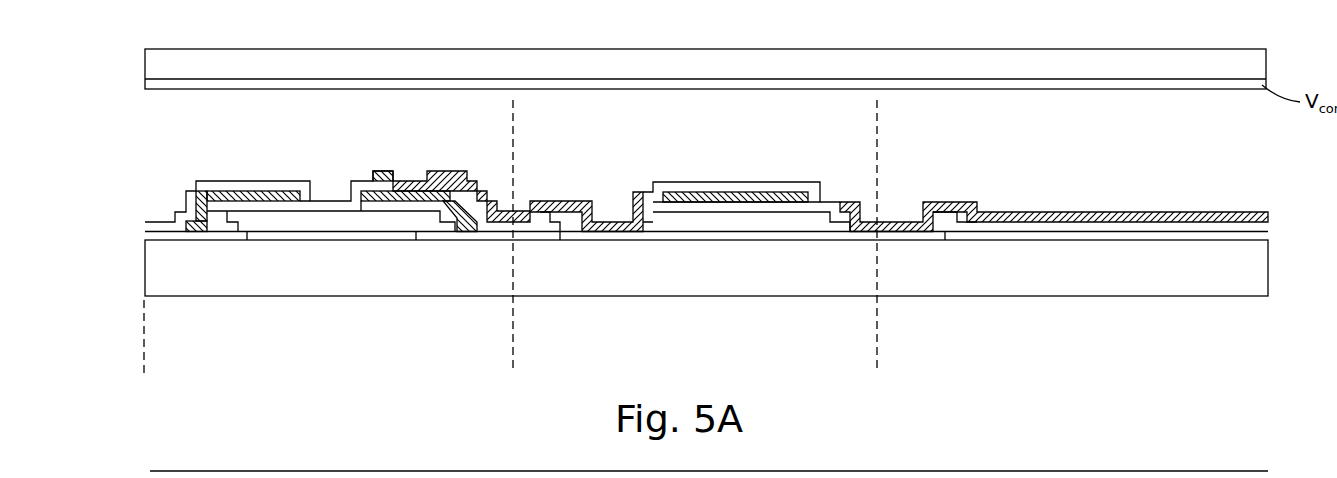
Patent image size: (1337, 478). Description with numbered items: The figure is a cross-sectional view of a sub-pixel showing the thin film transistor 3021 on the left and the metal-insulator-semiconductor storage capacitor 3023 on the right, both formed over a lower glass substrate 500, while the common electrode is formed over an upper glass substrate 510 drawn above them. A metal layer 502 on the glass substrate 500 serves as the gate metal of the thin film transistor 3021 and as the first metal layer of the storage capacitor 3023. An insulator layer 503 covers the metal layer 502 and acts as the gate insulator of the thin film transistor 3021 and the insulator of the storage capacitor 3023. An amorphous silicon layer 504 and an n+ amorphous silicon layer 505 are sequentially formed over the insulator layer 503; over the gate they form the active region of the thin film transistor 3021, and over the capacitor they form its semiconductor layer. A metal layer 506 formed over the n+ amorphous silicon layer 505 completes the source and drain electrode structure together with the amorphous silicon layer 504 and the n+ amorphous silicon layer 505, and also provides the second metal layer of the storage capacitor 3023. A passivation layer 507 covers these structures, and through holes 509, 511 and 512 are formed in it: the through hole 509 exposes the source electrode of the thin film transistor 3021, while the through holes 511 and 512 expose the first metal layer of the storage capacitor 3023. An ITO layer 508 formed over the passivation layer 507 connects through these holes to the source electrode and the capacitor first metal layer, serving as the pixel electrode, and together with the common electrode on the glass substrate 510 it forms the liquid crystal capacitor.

The glass substrate 500 is at (1268, 266).
The metal layer 502 is at (330, 240).
The insulator layer 503 is at (145, 235).
The amorphous silicon layer 504 is at (217, 228).
The n+ amorphous silicon layer 505 is at (397, 207).
The metal layer 506 is at (383, 172).
The passivation layer 507 is at (150, 220).
The ITO layer 508 is at (460, 180).
The through hole 509 is at (411, 164).
The glass substrate 510 is at (1262, 62).
The through hole 511 is at (610, 184).
The through hole 512 is at (897, 193).
The thin film transistor 3021 is at (501, 357).
The metal-insulator-semiconductor storage capacitor 3023 is at (865, 357).